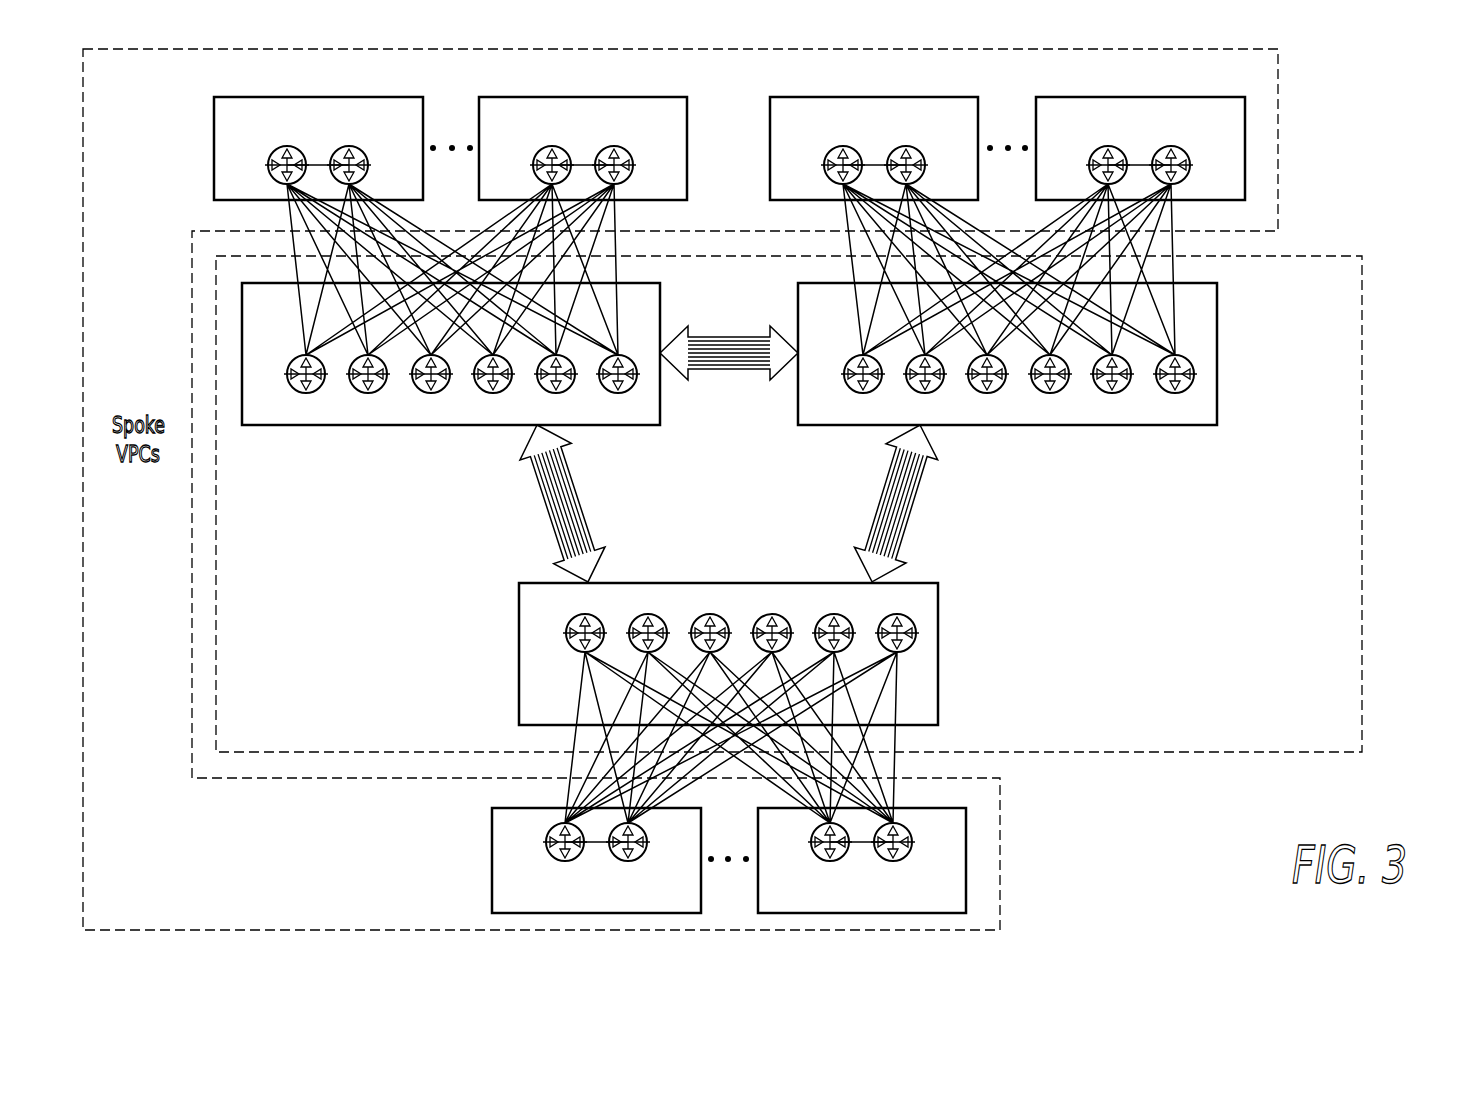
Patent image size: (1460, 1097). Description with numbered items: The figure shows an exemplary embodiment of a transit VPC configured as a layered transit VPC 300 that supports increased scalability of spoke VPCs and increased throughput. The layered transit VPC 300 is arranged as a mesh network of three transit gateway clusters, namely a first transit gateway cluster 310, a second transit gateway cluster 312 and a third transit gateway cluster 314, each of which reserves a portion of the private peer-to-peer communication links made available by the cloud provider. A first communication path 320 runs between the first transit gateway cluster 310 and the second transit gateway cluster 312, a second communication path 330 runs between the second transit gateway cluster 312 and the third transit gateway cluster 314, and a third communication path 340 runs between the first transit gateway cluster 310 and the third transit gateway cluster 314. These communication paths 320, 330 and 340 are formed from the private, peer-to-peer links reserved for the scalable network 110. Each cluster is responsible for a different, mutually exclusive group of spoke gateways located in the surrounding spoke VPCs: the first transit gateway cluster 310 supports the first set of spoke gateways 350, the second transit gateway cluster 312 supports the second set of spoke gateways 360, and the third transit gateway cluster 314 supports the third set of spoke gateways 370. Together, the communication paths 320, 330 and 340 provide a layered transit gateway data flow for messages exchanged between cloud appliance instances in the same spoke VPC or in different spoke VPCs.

The scalable network 110 is at (1331, 240).
The layered transit VPC 300 is at (834, 428).
The first transit gateway cluster 310 is at (298, 425).
The second transit gateway cluster 312 is at (1160, 425).
The third transit gateway cluster 314 is at (938, 653).
The first communication path 320 is at (720, 383).
The second communication path 330 is at (936, 500).
The third communication path 340 is at (601, 492).
The first set of spoke gateways 350 is at (390, 97).
The second set of spoke gateways 360 is at (947, 97).
The third set of spoke gateways 370 is at (643, 913).